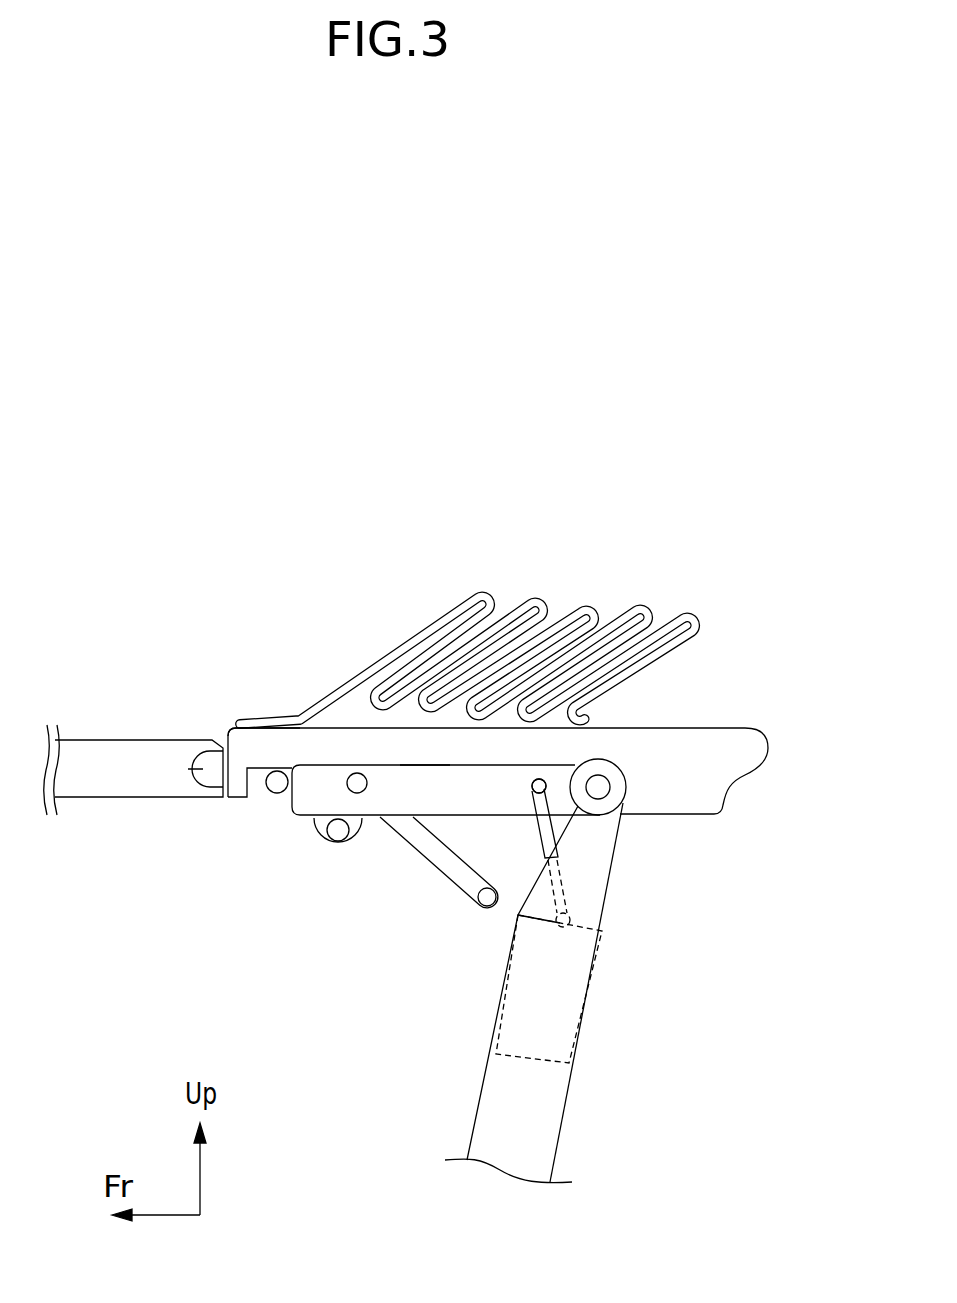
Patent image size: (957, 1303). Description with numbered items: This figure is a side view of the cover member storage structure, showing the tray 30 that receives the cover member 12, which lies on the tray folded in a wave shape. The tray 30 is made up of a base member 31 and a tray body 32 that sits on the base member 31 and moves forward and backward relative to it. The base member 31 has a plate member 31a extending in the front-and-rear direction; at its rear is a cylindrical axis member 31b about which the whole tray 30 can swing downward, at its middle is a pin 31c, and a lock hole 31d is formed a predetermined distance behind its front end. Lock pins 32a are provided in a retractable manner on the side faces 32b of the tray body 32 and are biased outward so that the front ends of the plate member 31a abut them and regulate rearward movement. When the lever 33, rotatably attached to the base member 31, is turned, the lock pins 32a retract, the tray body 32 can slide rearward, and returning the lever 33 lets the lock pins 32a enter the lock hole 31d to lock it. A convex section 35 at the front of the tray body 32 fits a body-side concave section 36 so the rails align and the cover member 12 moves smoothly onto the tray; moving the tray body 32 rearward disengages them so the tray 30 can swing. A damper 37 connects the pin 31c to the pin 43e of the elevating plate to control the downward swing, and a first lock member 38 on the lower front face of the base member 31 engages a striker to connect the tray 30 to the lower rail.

The cover member 12 is at (578, 604).
The tray 30 is at (757, 578).
The base member 31 is at (537, 755).
The plate member 31a is at (422, 780).
The axis member 31b is at (606, 797).
The pin 31c is at (546, 792).
The lock hole 31d is at (357, 783).
The tray body 32 is at (681, 723).
The lock pins 32a is at (272, 791).
The side faces 32b is at (262, 738).
The lever 33 is at (425, 882).
The convex section 35 is at (209, 748).
The concave section 36 is at (203, 790).
The damper 37 is at (522, 870).
The first lock member 38 is at (312, 848).
The pin 43e is at (572, 922).